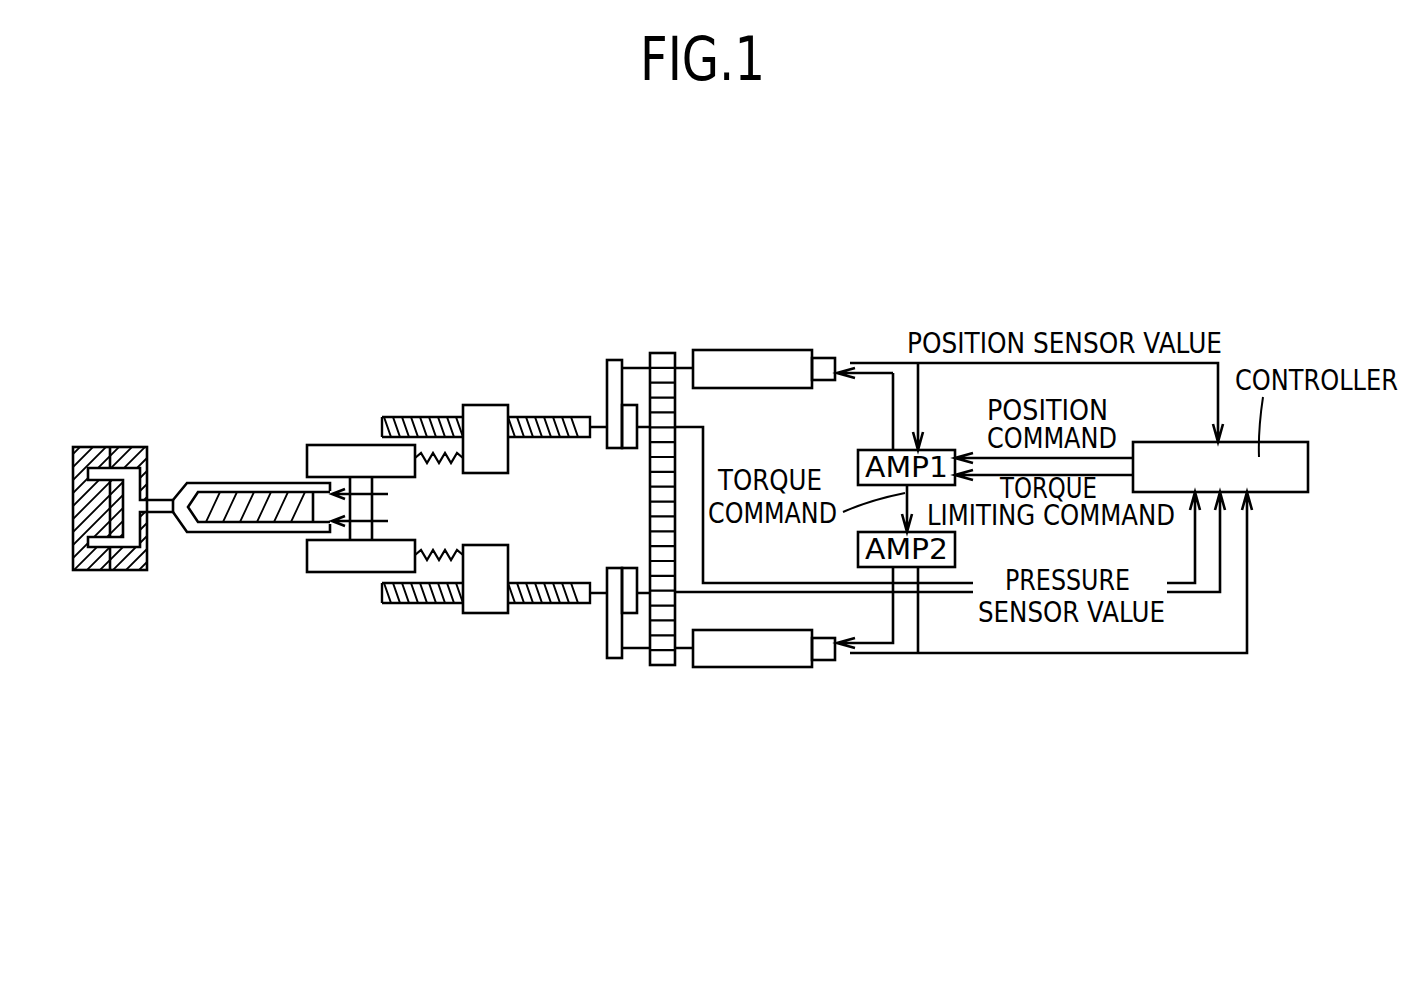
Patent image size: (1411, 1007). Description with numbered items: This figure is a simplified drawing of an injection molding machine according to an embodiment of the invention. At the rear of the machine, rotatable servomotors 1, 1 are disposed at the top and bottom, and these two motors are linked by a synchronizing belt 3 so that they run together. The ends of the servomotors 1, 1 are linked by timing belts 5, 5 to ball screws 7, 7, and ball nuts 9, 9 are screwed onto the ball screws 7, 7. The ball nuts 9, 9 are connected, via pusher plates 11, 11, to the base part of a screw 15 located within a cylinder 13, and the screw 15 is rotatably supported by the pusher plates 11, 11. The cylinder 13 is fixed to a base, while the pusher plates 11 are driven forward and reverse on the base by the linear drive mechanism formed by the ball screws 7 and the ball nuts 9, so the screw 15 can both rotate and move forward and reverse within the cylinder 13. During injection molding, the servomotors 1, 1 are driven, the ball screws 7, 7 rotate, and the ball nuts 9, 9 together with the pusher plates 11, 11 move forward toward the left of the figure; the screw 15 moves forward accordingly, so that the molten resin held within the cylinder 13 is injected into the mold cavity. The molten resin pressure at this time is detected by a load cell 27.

The servomotor 1 is at (747, 660).
The synchronizing belt 3 is at (665, 655).
The timing belt 5 is at (613, 655).
The ball screw 7 is at (535, 602).
The ball nut 9 is at (478, 598).
The pusher plate 11 is at (337, 562).
The cylinder 13 is at (217, 548).
The screw 15 is at (208, 497).
The load cell 27 is at (630, 592).